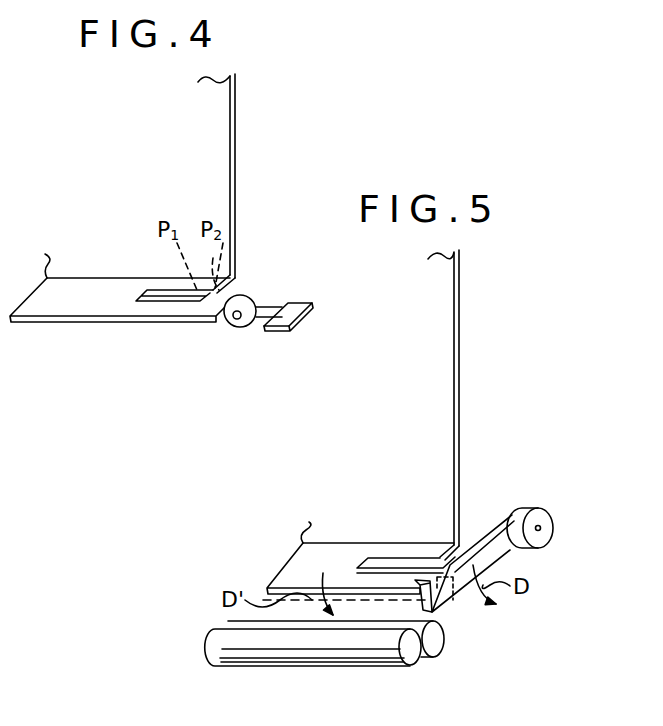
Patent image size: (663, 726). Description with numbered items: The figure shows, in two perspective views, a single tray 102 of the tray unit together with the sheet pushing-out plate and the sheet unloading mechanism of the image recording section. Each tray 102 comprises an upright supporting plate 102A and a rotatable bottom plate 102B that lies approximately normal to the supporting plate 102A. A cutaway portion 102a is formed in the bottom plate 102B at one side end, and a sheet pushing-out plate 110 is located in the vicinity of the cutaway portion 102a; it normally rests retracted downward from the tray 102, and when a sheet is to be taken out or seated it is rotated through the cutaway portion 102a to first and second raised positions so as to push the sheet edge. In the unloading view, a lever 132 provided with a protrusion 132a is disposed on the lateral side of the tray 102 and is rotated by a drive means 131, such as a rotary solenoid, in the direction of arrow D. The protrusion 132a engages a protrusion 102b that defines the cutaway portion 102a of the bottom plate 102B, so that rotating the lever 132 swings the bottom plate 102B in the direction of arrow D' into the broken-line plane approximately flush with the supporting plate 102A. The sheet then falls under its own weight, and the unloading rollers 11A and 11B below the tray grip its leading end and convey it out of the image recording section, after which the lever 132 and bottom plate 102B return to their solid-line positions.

In FIG. 4, the tray 102 is at (164, 224).
In FIG. 5, the tray 102 is at (401, 422).
In FIG. 4, the supporting plate 102A is at (213, 117).
In FIG. 5, the supporting plate 102A is at (430, 387).
In FIG. 4, the bottom plate 102B is at (83, 300).
In FIG. 5, the bottom plate 102B is at (317, 558).
In FIG. 4, the cutaway portion 102a is at (140, 288).
In FIG. 5, the cutaway portion 102a is at (393, 558).
In FIG. 5, the protrusion 102b is at (363, 578).
In FIG. 4, the sheet pushing-out plate 110 is at (297, 317).
In FIG. 5, the protrusion 132a is at (424, 578).
In FIG. 5, the lever 132 is at (498, 518).
In FIG. 5, the drive means 131 is at (540, 515).
In FIG. 5, the unloading roller 11A is at (366, 645).
In FIG. 5, the unloading roller 11B is at (440, 643).